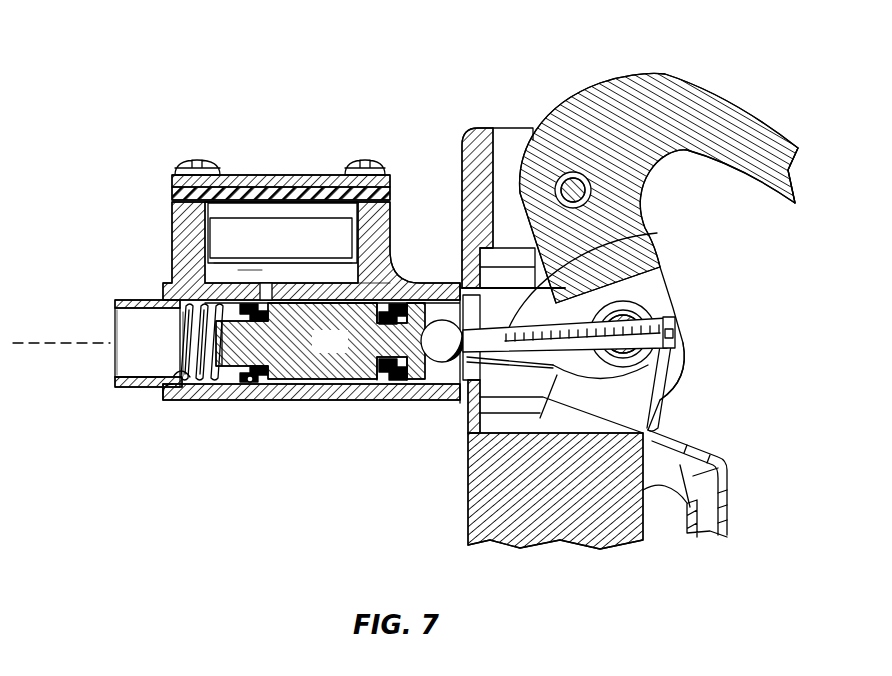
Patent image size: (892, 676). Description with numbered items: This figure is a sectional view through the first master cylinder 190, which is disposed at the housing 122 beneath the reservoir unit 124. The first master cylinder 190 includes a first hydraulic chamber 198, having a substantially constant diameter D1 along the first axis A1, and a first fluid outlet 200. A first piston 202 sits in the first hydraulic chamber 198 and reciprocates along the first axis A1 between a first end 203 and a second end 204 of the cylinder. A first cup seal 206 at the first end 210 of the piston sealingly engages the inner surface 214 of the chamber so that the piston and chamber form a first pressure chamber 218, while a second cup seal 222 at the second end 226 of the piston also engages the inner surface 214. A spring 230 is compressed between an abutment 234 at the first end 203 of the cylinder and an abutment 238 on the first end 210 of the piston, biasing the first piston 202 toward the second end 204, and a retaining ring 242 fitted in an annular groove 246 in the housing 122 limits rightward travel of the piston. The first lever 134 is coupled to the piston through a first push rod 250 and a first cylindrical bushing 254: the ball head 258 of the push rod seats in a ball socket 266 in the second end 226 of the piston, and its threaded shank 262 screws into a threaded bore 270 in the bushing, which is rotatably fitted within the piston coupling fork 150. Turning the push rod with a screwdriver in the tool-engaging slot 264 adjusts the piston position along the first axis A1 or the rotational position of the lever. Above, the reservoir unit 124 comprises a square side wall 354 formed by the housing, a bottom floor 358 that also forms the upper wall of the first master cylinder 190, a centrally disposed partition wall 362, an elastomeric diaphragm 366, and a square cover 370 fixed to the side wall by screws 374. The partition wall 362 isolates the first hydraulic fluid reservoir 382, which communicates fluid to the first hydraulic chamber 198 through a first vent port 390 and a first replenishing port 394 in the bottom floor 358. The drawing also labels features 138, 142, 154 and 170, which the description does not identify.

The housing 122 is at (460, 192).
The reservoir unit 124 is at (150, 192).
The first lever 134 is at (657, 60).
The pivot pin 138 is at (572, 172).
The mounting bracket 142 is at (737, 457).
The piston coupling fork 150 is at (667, 280).
The lever arm 154 is at (733, 97).
The adjustment plate 170 is at (683, 361).
The first master cylinder 190 is at (262, 400).
The first hydraulic chamber 198 is at (300, 398).
The first fluid outlet 200 is at (112, 333).
The first piston 202 is at (332, 367).
The first end 203 is at (173, 400).
The second end 204 is at (437, 383).
The first cup seal 206 is at (262, 386).
The first end 210 is at (235, 358).
The inner surface 214 is at (150, 385).
The first pressure chamber 218 is at (152, 360).
The second cup seal 222 is at (378, 387).
The second end 226 is at (423, 383).
The spring 230 is at (222, 325).
The abutment 234 is at (188, 312).
The abutment 238 is at (245, 310).
The retaining ring 242 is at (427, 317).
The annular groove 246 is at (415, 316).
The first push rod 250 is at (657, 233).
The first cylindrical bushing 254 is at (628, 303).
The ball head 258 is at (444, 352).
The threaded shank 262 is at (648, 422).
The tool-engaging slot 264 is at (675, 334).
The ball socket 266 is at (420, 308).
The threaded bore 270 is at (655, 381).
The square side wall 354 is at (180, 227).
The bottom floor 358 is at (388, 196).
The partition wall 362 is at (343, 283).
The elastomeric diaphragm 366 is at (257, 230).
The square cover 370 is at (257, 292).
The screws 374 is at (183, 161).
The first hydraulic fluid reservoir 382 is at (330, 282).
The first vent (inlet) port 390 is at (238, 280).
The first replenishing port 394 is at (282, 277).
The first axis A1 is at (55, 342).
The diameter D1 is at (371, 304).